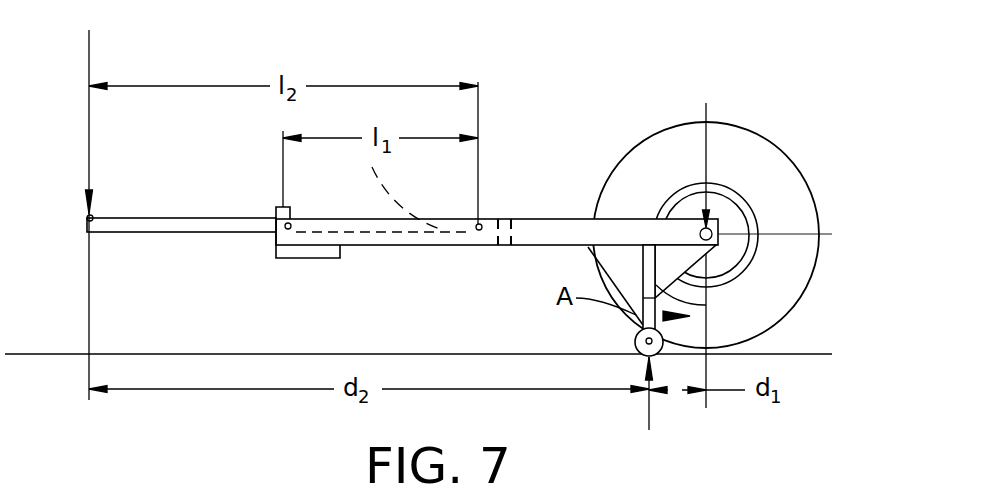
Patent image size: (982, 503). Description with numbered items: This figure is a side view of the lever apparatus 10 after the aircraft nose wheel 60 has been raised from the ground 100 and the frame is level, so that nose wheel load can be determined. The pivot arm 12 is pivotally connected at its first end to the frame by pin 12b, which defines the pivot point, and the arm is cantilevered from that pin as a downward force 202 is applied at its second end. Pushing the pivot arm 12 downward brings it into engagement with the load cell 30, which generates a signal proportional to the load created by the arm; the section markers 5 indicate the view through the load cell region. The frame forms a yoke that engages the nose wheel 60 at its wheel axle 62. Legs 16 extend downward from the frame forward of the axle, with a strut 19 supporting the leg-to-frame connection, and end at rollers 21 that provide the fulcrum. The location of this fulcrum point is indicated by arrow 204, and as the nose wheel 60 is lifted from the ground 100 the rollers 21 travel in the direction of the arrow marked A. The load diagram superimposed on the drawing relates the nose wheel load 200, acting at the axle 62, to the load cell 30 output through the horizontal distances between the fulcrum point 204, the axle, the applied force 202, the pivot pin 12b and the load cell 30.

The lever apparatus 10 is at (525, 102).
The pivot arm 12 is at (237, 218).
The pin 12b is at (483, 223).
The load cell 30 is at (276, 253).
The section line 5- 5 is at (296, 213).
The legs 16 is at (640, 331).
The strut 19 is at (706, 305).
The rollers 21 is at (635, 343).
The nose wheel 60 is at (742, 125).
The wheel axle 62 is at (712, 232).
The ground 100 is at (310, 353).
The nose wheel load 200 is at (715, 165).
The downward force 202 is at (91, 62).
The fulcrum point 204 is at (650, 416).